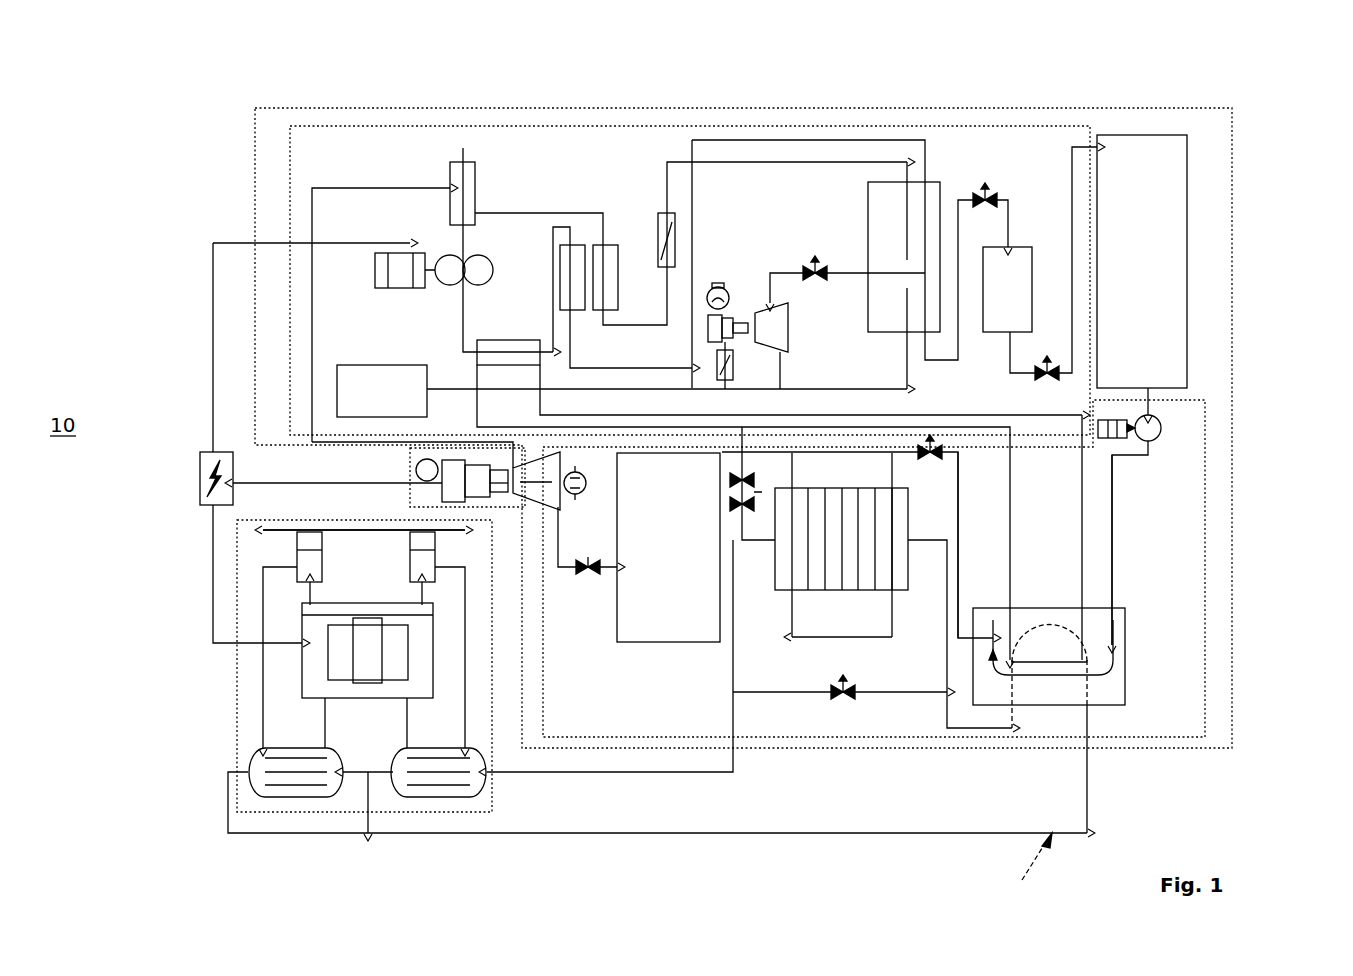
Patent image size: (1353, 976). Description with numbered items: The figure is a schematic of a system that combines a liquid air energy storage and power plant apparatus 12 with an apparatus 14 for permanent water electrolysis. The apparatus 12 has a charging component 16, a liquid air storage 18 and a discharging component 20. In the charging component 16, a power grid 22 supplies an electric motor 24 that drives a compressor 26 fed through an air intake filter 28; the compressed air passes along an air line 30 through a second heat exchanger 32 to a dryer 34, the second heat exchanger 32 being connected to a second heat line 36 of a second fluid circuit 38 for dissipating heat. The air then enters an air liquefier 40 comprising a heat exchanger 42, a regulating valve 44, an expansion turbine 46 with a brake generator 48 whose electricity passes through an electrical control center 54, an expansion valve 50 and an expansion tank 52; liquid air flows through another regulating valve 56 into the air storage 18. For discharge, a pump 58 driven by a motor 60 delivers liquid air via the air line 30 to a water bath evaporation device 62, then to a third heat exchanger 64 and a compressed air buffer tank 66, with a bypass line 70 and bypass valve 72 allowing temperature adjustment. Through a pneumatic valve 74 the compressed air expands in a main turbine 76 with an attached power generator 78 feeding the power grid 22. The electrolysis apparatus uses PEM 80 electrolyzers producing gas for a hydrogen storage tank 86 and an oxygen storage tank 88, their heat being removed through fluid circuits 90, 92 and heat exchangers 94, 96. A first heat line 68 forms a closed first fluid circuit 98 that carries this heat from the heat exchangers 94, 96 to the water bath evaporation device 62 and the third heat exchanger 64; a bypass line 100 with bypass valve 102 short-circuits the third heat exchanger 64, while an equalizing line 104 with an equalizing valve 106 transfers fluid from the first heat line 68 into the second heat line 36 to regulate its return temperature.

The liquid air energy storage and power plant apparatus 12 is at (255, 118).
The apparatus for permanent water electrolysis 14 is at (235, 658).
The charging component 16 is at (290, 178).
The liquid air storage 18 is at (1187, 247).
The discharging component 20 is at (416, 470).
The power grid 22 is at (200, 485).
The electric motor 24 is at (375, 268).
The compressor 26 is at (447, 255).
The air intake filter 28 is at (473, 170).
The air line 30 is at (467, 317).
The second heat exchanger 32 is at (500, 338).
The dryer 34 is at (577, 245).
The second heat line 36 is at (337, 367).
The second fluid circuit 38 is at (1090, 570).
The air liquefier 40 is at (847, 310).
The heat exchanger 42 is at (930, 180).
The regulating valve 44 is at (818, 262).
The expansion turbine 46 is at (770, 327).
The brake generator 48 is at (722, 315).
The expansion valve 50 is at (988, 195).
The expansion tank 52 is at (1027, 245).
The electrical control center 54 is at (477, 413).
The regulating valve 56 is at (1052, 368).
The pump 58 is at (1163, 423).
The motor 60 is at (1123, 420).
The water bath evaporation device 62 is at (1125, 678).
The third heat exchanger 64 is at (895, 598).
The compressed air buffer tank 66 is at (660, 642).
The first heat line 68 is at (1090, 782).
The bypass line 70 is at (962, 575).
The bypass valve 72 is at (1113, 463).
The pneumatic valve 74 is at (598, 555).
The main turbine 76 is at (540, 505).
The power generator 78 is at (410, 452).
The PEM electrolyzers 80 is at (298, 692).
The hydrogen storage tank 86 is at (308, 515).
The oxygen storage tank 88 is at (418, 527).
The fluid circuit 90 is at (263, 677).
The fluid circuit 92 is at (513, 665).
The heat exchanger 94 is at (250, 757).
The heat exchanger 96 is at (477, 790).
The first fluid circuit 98 is at (1031, 866).
The bypass line 100 is at (773, 530).
The bypass valve 102 is at (843, 700).
The equalizing line 104 is at (787, 690).
The equalizing valve 106 is at (758, 535).